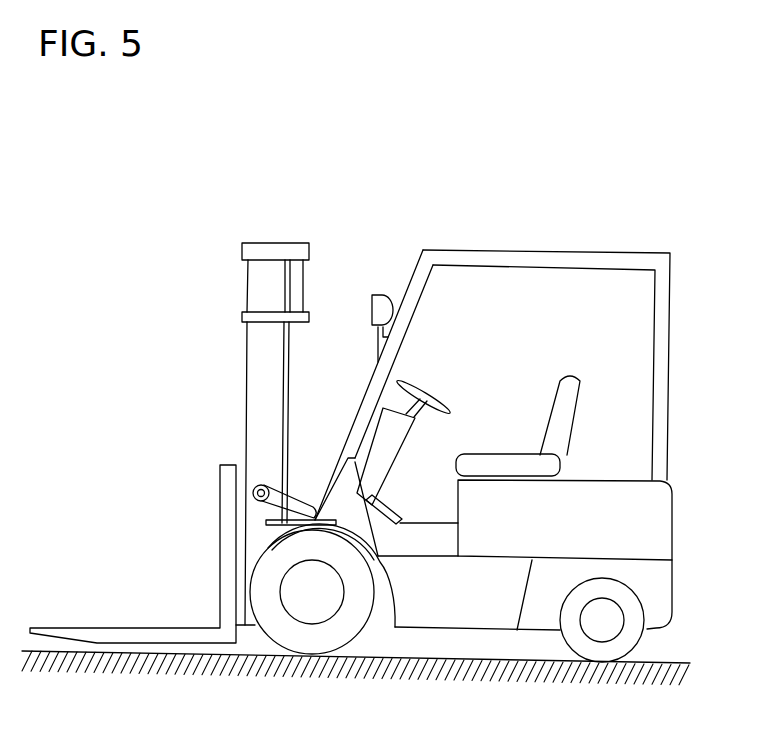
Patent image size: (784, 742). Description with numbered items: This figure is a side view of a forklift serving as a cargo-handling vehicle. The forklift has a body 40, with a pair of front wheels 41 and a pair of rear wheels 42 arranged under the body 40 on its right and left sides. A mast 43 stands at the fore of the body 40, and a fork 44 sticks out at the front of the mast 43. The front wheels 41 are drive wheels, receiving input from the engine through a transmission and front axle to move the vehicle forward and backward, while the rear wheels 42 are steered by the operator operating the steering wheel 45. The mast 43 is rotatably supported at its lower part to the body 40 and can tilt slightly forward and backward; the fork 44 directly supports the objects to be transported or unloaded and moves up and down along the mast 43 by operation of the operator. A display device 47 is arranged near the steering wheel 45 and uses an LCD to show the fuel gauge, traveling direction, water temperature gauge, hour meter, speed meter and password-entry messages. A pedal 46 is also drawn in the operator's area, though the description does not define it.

The body 40 is at (673, 512).
The front wheels 41 is at (262, 637).
The rear wheels 42 is at (562, 643).
The mast 43 is at (255, 383).
The fork 44 is at (133, 627).
The steering wheel 45 is at (429, 392).
The accelerator pedal 46 is at (391, 507).
The display device 47 is at (383, 402).